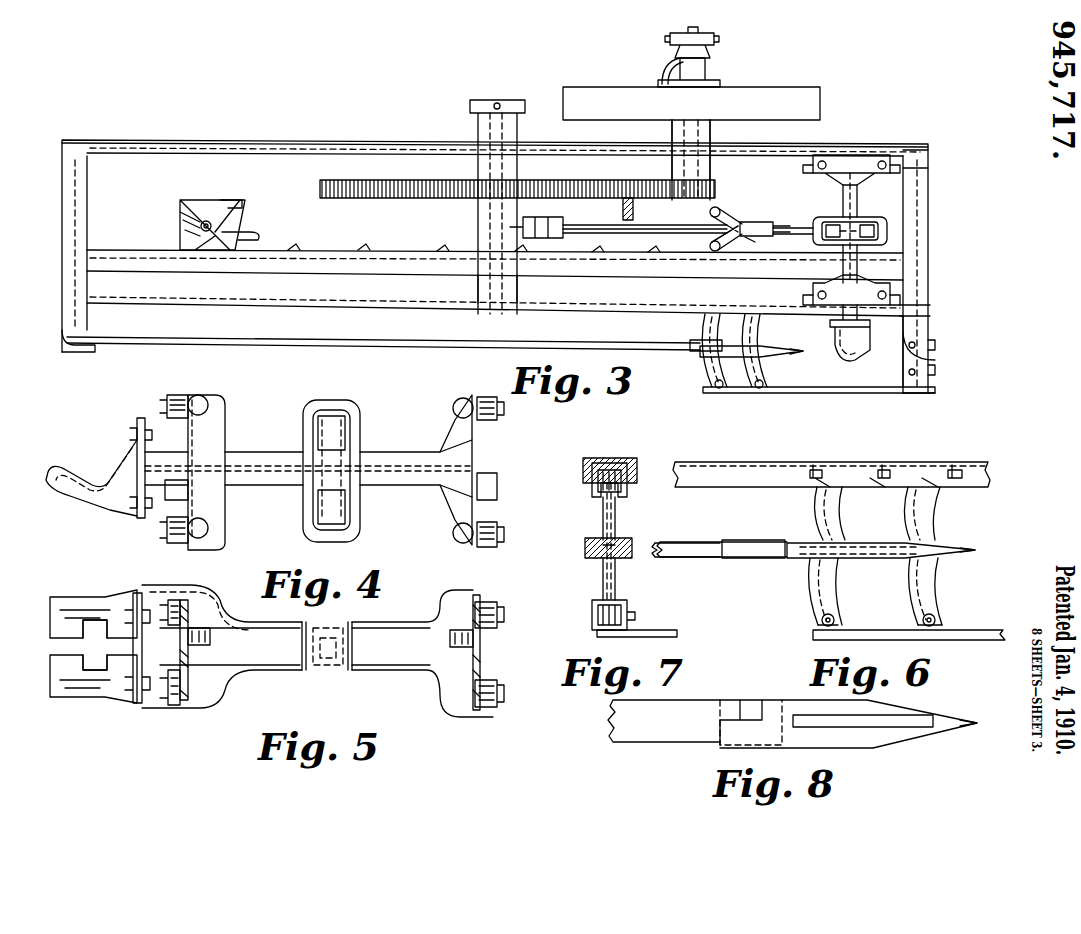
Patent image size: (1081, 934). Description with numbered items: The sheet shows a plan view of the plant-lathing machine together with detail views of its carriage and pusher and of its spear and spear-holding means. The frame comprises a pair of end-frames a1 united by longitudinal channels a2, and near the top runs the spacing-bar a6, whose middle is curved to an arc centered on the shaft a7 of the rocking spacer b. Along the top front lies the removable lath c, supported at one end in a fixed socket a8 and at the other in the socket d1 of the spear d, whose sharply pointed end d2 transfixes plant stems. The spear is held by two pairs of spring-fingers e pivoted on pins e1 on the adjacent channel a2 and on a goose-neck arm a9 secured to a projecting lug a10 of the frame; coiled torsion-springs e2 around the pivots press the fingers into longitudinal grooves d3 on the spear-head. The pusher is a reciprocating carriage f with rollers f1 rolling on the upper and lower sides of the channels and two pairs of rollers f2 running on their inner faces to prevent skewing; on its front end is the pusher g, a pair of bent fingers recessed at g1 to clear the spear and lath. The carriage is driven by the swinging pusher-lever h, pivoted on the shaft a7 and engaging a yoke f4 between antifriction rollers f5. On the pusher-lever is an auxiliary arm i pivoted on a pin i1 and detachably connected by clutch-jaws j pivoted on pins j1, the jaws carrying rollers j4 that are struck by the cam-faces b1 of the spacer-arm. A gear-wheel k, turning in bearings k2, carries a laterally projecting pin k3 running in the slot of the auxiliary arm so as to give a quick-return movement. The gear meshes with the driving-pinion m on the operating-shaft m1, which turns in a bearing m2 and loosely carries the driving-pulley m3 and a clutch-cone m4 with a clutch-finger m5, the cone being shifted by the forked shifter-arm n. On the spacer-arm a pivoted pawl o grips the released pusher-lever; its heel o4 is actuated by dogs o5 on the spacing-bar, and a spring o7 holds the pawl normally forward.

In FIG. 3, the end-frame a1 is at (60, 238).
In FIG. 3, the longitudinal channel a2 is at (340, 147).
In FIG. 5, the longitudinal channel a2 is at (180, 655).
In FIG. 7, the longitudinal channel a2 is at (627, 458).
In FIG. 6, the longitudinal channel a2 is at (733, 466).
In FIG. 3, the spacing-bar a6 is at (312, 276).
In FIG. 3, the shaft a7 is at (478, 285).
In FIG. 3, the fixed socket a8 is at (80, 352).
In FIG. 3, the goose-neck arm a9 is at (850, 393).
In FIG. 7, the goose-neck arm a9 is at (668, 631).
In FIG. 6, the goose-neck arm a9 is at (982, 640).
In FIG. 3, the projecting lug a10 is at (930, 328).
In FIG. 3, the spacer b is at (335, 250).
In FIG. 3, the cam-face b1 is at (240, 207).
In FIG. 3, the lath c is at (398, 347).
In FIG. 7, the lath c is at (662, 543).
In FIG. 6, the lath c is at (690, 548).
In FIG. 8, the lath c is at (688, 706).
In FIG. 3, the spear d is at (755, 351).
In FIG. 7, the spear d is at (590, 560).
In FIG. 6, the spear d is at (880, 558).
In FIG. 8, the spear d is at (900, 714).
In FIG. 3, the socket of spear d1 is at (690, 351).
In FIG. 7, the socket of spear d1 is at (618, 546).
In FIG. 6, the socket of spear d1 is at (746, 558).
In FIG. 8, the socket of spear d1 is at (745, 700).
In FIG. 3, the pointed end d2 is at (803, 351).
In FIG. 6, the pointed end d2 is at (978, 542).
In FIG. 8, the pointed end d2 is at (977, 723).
In FIG. 6, the longitudinal groove d3 is at (866, 546).
In FIG. 8, the longitudinal groove d3 is at (890, 727).
In FIG. 3, the spring-finger e is at (718, 336).
In FIG. 7, the spring-finger e is at (603, 525).
In FIG. 6, the spring-finger e is at (836, 518).
In FIG. 3, the pin e1 is at (723, 384).
In FIG. 7, the pin e1 is at (590, 484).
In FIG. 6, the pin e1 is at (900, 466).
In FIG. 7, the coiled torsion-spring e2 is at (612, 518).
In FIG. 6, the coiled torsion-spring e2 is at (820, 518).
In FIG. 3, the reciprocating carriage f is at (858, 200).
In FIG. 4, the reciprocating carriage f is at (395, 458).
In FIG. 5, the reciprocating carriage f is at (168, 600).
In FIG. 3, the roller f1 is at (880, 155).
In FIG. 4, the roller f1 is at (168, 397).
In FIG. 5, the roller f1 is at (172, 705).
In FIG. 3, the roller f2 is at (818, 170).
In FIG. 4, the roller f2 is at (208, 406).
In FIG. 5, the roller f2 is at (210, 636).
In FIG. 3, the yoke f4 is at (887, 228).
In FIG. 4, the yoke f4 is at (355, 430).
In FIG. 5, the yoke f4 is at (348, 648).
In FIG. 3, the antifriction roller f5 is at (832, 225).
In FIG. 4, the antifriction roller f5 is at (330, 490).
In FIG. 5, the antifriction roller f5 is at (336, 626).
In FIG. 3, the pusher g is at (870, 343).
In FIG. 4, the pusher g is at (110, 508).
In FIG. 5, the pusher g is at (110, 597).
In FIG. 5, the recess g1 is at (95, 633).
In FIG. 3, the pusher-lever h is at (790, 228).
In FIG. 3, the auxiliary arm i is at (697, 225).
In FIG. 3, the pin i1 is at (536, 217).
In FIG. 3, the clutch-jaw j is at (738, 224).
In FIG. 3, the pin j1 is at (755, 242).
In FIG. 3, the roller j4 is at (712, 242).
In FIG. 3, the gear-wheel k is at (412, 198).
In FIG. 3, the bearing k2 is at (517, 132).
In FIG. 3, the laterally projecting pin k3 is at (623, 212).
In FIG. 3, the driving-pinion m is at (715, 190).
In FIG. 3, the operating-shaft m1 is at (708, 68).
In FIG. 3, the bearing m2 is at (710, 138).
In FIG. 3, the driving-pulley m3 is at (820, 104).
In FIG. 3, the clutch-cone m4 is at (710, 50).
In FIG. 3, the clutch-finger m5 is at (664, 68).
In FIG. 3, the forked shifter-arm n is at (667, 38).
In FIG. 3, the pawl o is at (240, 232).
In FIG. 3, the heel o4 is at (195, 250).
In FIG. 3, the dog o5 is at (296, 244).
In FIG. 3, the spring o7 is at (180, 227).